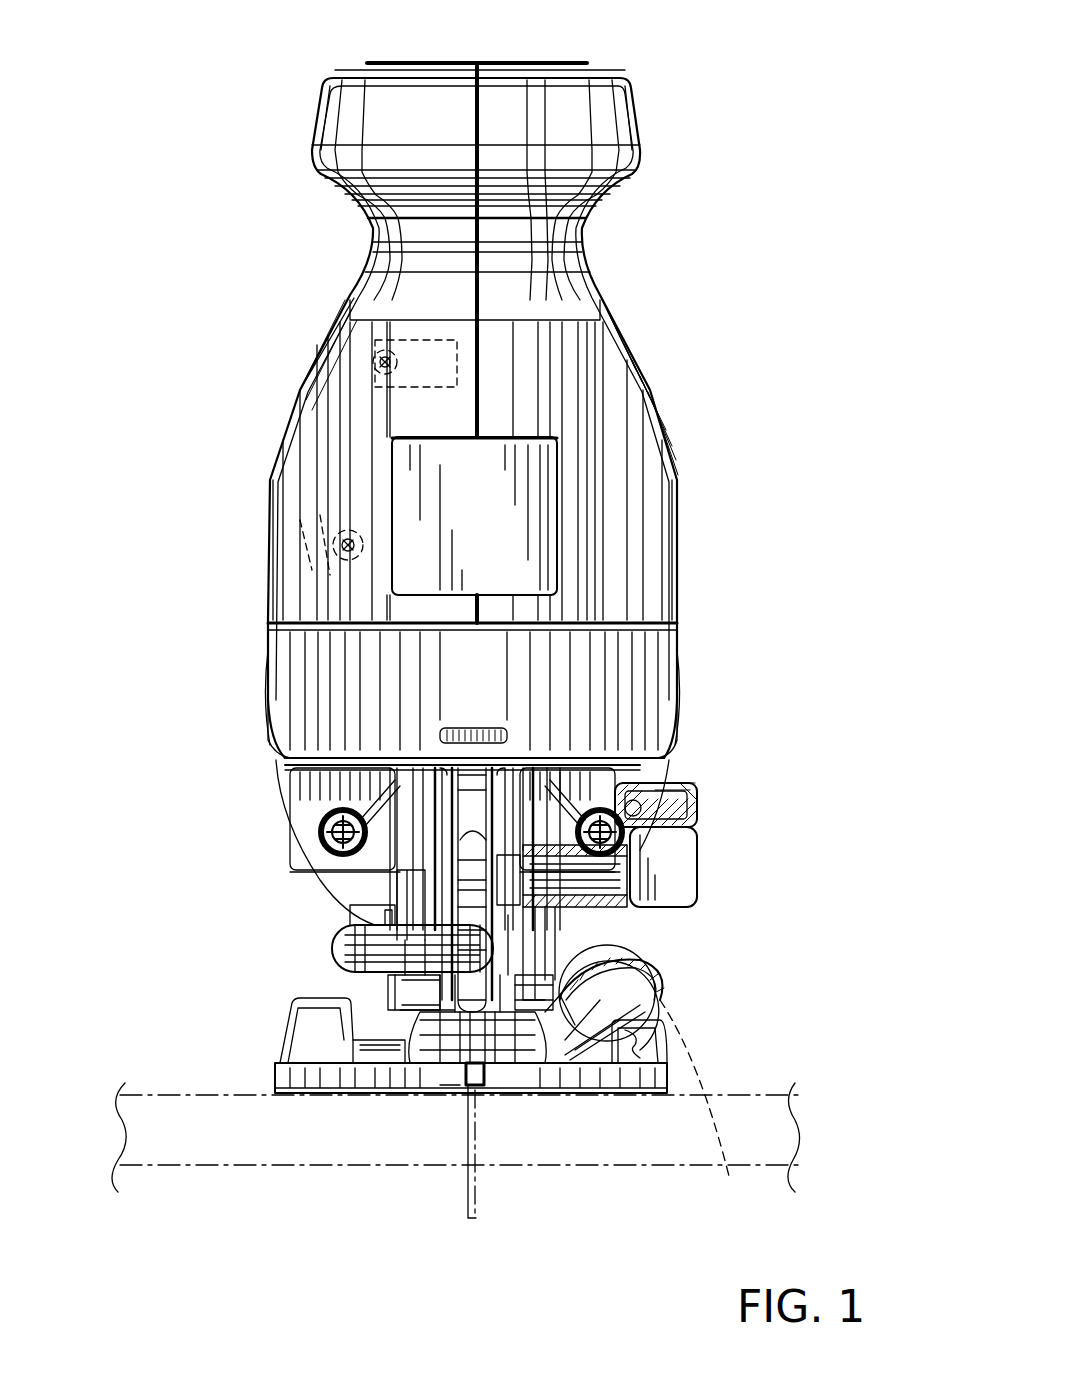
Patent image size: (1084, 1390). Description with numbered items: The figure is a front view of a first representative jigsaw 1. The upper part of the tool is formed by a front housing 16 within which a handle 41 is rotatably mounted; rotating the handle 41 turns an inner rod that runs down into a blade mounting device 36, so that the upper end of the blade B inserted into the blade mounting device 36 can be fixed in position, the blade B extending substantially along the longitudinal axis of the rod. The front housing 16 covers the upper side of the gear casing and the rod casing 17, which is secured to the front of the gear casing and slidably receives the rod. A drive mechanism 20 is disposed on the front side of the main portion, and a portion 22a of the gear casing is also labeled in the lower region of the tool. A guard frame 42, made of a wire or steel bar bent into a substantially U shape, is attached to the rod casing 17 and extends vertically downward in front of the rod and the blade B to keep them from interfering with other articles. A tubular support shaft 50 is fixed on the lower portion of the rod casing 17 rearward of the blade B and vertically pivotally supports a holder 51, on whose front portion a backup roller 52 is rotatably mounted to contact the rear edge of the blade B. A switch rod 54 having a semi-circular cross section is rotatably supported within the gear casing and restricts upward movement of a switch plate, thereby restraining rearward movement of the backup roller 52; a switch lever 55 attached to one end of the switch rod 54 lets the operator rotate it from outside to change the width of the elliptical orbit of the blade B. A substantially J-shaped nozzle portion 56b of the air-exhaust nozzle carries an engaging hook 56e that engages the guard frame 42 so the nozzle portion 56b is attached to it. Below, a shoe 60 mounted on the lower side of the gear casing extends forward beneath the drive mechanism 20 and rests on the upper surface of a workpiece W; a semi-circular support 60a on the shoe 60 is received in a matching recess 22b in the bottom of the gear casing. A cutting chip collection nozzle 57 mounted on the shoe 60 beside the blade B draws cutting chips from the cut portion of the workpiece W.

The jigsaw 1 is at (679, 355).
The front housing 16 is at (303, 388).
The rod casing 17 is at (568, 690).
The drive mechanism 20 is at (675, 462).
The slide bar / guide portion 22a is at (407, 892).
The recess 22b is at (403, 1027).
The blade mounting device 36 is at (440, 825).
The handle 41 is at (520, 62).
The guard frame 42 is at (500, 862).
The support shaft 50 is at (620, 1063).
The holder 51 is at (390, 1095).
The backup roller 52 is at (445, 1095).
The switch rod 54 is at (590, 880).
The switch lever 55 is at (672, 875).
The nozzle portion 56b is at (333, 950).
The engaging hook 56e is at (593, 963).
The cutting chip collection nozzle 57 is at (660, 1000).
The shoe 60 is at (340, 1050).
The support 60a is at (405, 1053).
The blade B is at (477, 1205).
The workpiece W is at (760, 1103).